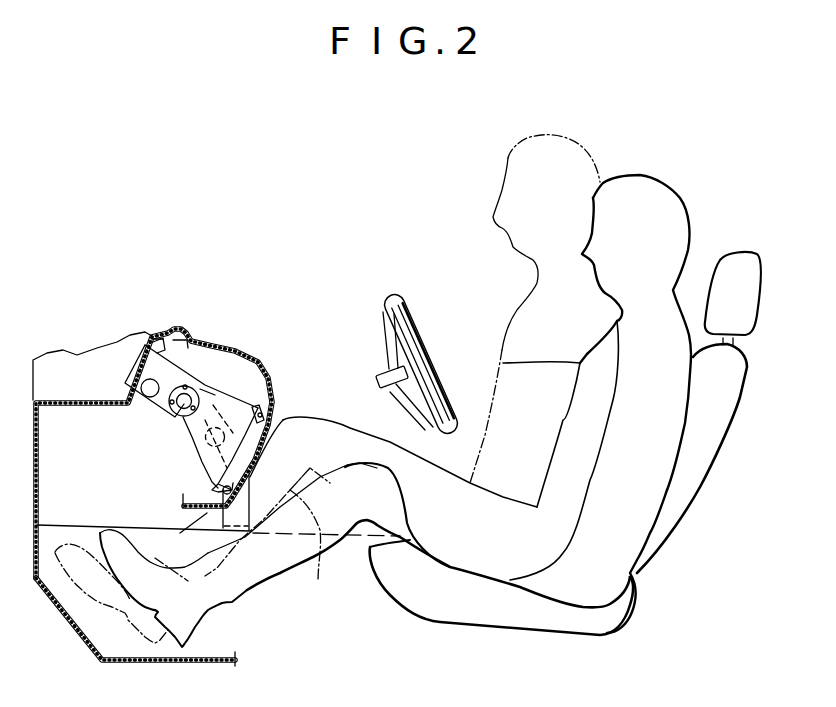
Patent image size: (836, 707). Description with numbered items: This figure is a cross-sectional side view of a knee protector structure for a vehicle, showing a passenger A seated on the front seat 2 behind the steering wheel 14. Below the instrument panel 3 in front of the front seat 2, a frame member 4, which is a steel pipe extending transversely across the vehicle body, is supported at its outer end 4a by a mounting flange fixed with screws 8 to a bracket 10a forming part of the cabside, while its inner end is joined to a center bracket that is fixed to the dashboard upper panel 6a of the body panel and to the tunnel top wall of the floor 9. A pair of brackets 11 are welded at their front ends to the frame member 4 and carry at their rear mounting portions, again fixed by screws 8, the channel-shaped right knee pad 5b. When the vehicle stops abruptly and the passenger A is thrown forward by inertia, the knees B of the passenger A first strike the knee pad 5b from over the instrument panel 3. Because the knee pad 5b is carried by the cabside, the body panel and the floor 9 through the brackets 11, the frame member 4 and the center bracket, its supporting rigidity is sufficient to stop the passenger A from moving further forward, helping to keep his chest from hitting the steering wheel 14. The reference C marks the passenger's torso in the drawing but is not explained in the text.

The front seat 2 is at (505, 618).
The instrument panel 3 is at (185, 328).
The frame member 4 is at (180, 382).
The outer end of the frame member 4a is at (197, 390).
The right knee pad 5b is at (260, 406).
The dashboard upper panel 6a is at (160, 333).
The screws 8 is at (266, 428).
The floor 9 is at (208, 652).
The bracket 10a is at (188, 334).
The brackets 11 is at (235, 400).
The steering wheel 14 is at (410, 300).
The passenger A is at (633, 174).
The knees B is at (318, 582).
The torso angle C is at (503, 348).